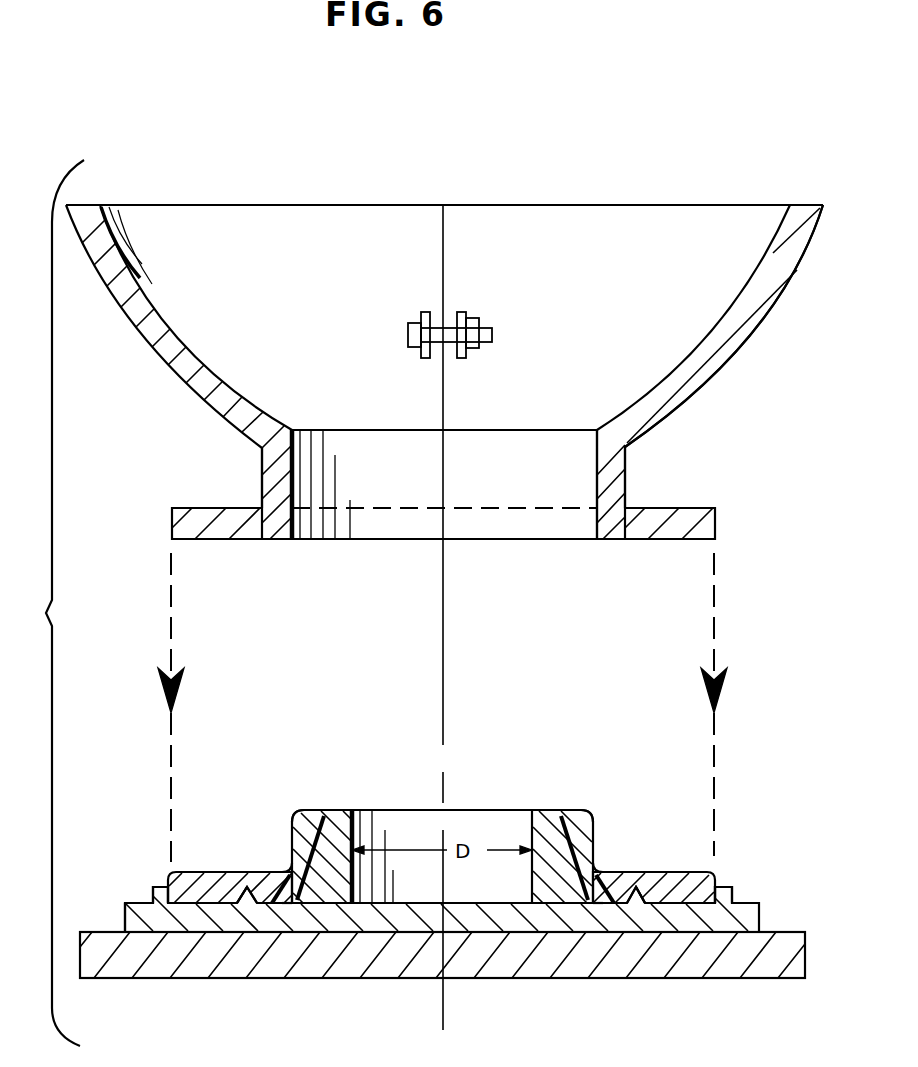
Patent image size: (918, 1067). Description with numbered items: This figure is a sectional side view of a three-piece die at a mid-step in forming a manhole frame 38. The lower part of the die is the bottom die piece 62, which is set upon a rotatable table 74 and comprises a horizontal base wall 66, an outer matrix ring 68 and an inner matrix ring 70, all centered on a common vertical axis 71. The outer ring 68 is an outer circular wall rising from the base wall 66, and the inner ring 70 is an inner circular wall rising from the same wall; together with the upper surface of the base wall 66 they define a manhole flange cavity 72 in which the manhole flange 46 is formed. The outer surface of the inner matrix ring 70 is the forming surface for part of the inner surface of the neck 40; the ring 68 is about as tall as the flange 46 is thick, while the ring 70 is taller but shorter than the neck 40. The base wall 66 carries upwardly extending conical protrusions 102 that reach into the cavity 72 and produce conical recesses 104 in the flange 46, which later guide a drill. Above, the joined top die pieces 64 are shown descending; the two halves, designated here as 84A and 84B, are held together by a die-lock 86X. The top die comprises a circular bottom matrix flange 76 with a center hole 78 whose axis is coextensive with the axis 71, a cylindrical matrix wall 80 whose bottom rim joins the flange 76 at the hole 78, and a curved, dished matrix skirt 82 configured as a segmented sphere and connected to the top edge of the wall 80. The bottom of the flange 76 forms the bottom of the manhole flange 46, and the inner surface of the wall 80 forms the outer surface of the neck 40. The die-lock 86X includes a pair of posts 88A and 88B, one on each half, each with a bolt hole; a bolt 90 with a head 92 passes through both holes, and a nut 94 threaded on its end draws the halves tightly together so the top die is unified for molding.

The manhole frame 38 is at (50, 603).
The top die pieces 64 is at (592, 151).
The first rotor half 84A is at (351, 205).
The second rotor half 84B is at (497, 205).
The matrix skirt 82 is at (700, 388).
The cylindrical matrix wall 80 is at (617, 480).
The center hole 78 is at (517, 485).
The bottom matrix flange 76 is at (715, 522).
The die-lock 86X is at (464, 324).
The head 92 is at (408, 322).
The bolt 90 is at (433, 327).
The nut 94 is at (478, 297).
The post 88A is at (425, 358).
The post 88B is at (464, 357).
The vertical axis 71 is at (443, 657).
The inner matrix ring 70 is at (342, 808).
The neck 40 is at (293, 835).
The manhole flange 46 is at (250, 872).
The conical recesses 104 is at (244, 892).
The outer matrix ring 68 is at (163, 887).
The bottom die piece 62 is at (123, 888).
The base wall 66 is at (125, 917).
The rotatable table 74 is at (112, 962).
The conical protrusions 102 is at (248, 900).
The manhole flange cavity 72 is at (290, 896).